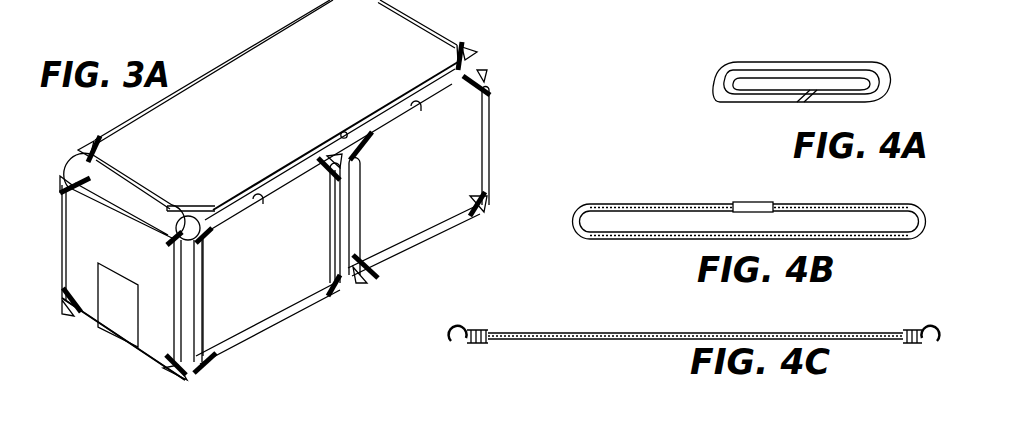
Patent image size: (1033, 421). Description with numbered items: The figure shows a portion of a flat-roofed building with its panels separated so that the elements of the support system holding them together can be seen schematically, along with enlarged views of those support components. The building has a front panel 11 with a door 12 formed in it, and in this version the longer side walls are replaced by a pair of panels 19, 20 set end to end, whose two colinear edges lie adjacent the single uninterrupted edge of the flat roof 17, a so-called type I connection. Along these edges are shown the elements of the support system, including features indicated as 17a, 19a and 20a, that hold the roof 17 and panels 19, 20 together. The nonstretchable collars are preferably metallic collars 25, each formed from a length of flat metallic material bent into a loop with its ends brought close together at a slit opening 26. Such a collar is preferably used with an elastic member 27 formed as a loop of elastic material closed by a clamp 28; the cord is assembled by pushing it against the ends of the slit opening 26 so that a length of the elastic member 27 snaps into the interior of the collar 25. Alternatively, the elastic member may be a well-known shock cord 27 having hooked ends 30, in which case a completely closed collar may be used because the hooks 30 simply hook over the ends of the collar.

In FIG. 3A, the front panel 11 is at (136, 262).
In FIG. 3A, the door 12 is at (126, 317).
In FIG. 3A, the flat roof 17 is at (263, 110).
In FIG. 3A, the notch in top panel 17a is at (347, 131).
In FIG. 3A, the panel 19 is at (292, 303).
In FIG. 3A, the hook of side panel 19a is at (256, 205).
In FIG. 3A, the panel 20 is at (447, 212).
In FIG. 3A, the hook of side panel 20a is at (416, 112).
In FIG. 3A, the metallic collar 25 is at (325, 178).
In FIG. 4A, the metallic collar 25 is at (826, 57).
In FIG. 4A, the slit opening 26 is at (797, 109).
In FIG. 3A, the elastic member 27 is at (425, 79).
In FIG. 4B, the elastic member 27 is at (658, 205).
In FIG. 4C, the elastic member 27 is at (572, 333).
In FIG. 4B, the clamp 28 is at (767, 203).
In FIG. 4C, the hooked end 30 is at (449, 334).